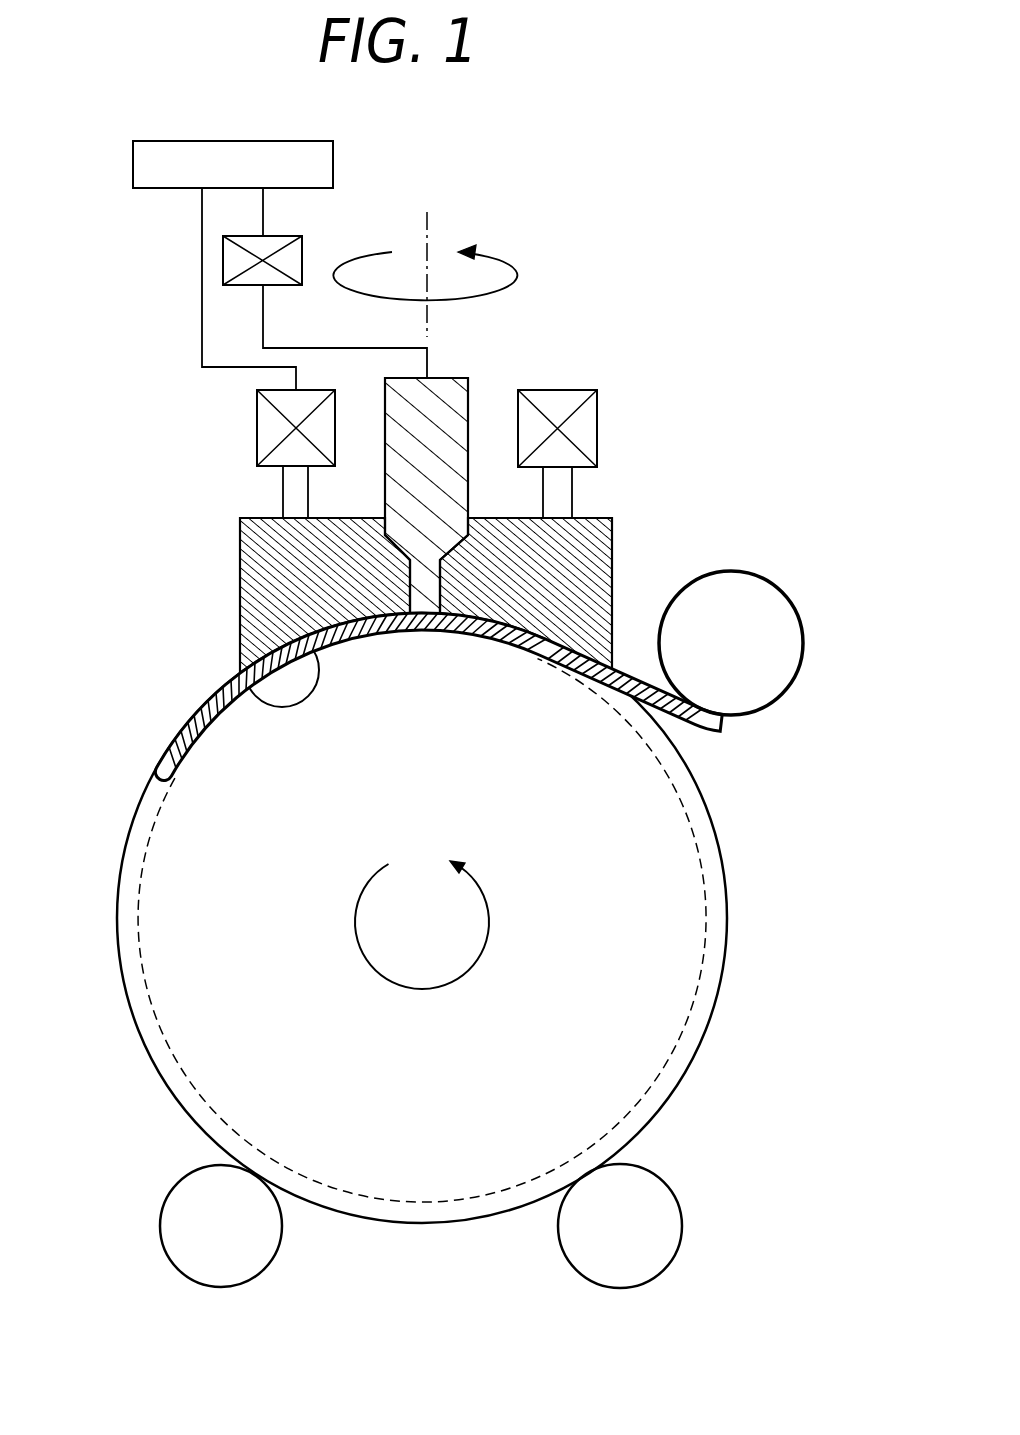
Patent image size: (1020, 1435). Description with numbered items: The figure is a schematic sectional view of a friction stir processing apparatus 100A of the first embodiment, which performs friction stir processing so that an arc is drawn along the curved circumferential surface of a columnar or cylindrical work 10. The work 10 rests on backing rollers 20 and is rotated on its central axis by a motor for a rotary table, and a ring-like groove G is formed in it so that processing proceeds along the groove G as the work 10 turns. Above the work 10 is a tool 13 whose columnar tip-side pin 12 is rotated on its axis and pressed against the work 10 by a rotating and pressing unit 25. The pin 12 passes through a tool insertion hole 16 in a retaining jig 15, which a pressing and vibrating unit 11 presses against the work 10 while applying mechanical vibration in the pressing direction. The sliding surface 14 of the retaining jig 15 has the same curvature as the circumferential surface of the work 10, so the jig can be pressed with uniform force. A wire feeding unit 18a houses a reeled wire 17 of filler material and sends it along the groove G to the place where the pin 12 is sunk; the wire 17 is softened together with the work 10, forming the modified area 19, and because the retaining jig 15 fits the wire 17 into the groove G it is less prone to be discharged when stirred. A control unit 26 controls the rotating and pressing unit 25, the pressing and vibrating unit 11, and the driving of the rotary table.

The friction stir processing apparatus 100A is at (640, 340).
The control unit 26 is at (330, 172).
The rotating and pressing unit 25 is at (297, 236).
The pressing and vibrating unit 11 is at (273, 430).
The tool 13 is at (452, 417).
The pin 12 is at (427, 600).
The tool insertion hole 16 is at (432, 572).
The retaining jig 15 is at (267, 576).
The sliding surface 14 is at (240, 680).
The modified area 19 is at (185, 753).
The wire 17 is at (618, 667).
The wire feeding unit 18a is at (755, 647).
The work 10 is at (234, 880).
The groove G is at (718, 912).
The backing rollers 20 is at (198, 1220).